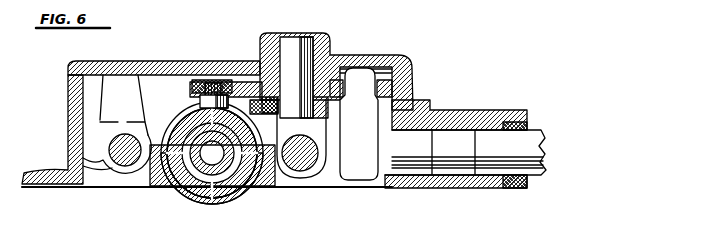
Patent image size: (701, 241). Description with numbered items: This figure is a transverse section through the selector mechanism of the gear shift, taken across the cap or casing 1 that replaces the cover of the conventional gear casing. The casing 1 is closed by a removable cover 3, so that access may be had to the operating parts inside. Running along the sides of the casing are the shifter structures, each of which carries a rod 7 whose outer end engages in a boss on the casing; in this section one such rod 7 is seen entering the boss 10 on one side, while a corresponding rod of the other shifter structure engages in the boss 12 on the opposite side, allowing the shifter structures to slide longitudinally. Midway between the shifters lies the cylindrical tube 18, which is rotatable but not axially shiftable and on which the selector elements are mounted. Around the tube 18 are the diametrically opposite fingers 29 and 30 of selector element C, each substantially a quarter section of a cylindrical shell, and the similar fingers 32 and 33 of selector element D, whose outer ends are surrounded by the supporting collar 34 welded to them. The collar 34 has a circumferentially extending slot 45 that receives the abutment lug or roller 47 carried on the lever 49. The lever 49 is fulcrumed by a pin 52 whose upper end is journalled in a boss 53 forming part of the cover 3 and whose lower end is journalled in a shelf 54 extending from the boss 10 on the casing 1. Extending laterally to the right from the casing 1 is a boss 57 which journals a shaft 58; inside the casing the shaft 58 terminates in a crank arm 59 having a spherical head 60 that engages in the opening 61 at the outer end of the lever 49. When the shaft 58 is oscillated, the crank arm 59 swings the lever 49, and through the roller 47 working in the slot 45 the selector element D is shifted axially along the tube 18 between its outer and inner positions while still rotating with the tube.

The casing 1 is at (74, 97).
The cover 3 is at (134, 68).
The rod 7 is at (127, 160).
The boss 10 is at (284, 173).
The boss 12 is at (93, 135).
The cylindrical tube 18 is at (172, 176).
The finger 29 is at (235, 122).
The finger 30 is at (197, 184).
The finger 32 is at (184, 122).
The finger 33 is at (244, 198).
The supporting collar 34 is at (218, 208).
The circumferentially extending slot 45 is at (258, 131).
The abutment lug or roller 47 is at (210, 95).
The lever 49 is at (233, 88).
The pin 52 is at (292, 62).
The boss 53 is at (332, 41).
The shelf 54 is at (346, 124).
The boss 57 is at (488, 90).
The shaft 58 is at (523, 143).
The crank arm 59 is at (413, 108).
The spherical head 60 is at (362, 82).
The opening 61 is at (412, 83).